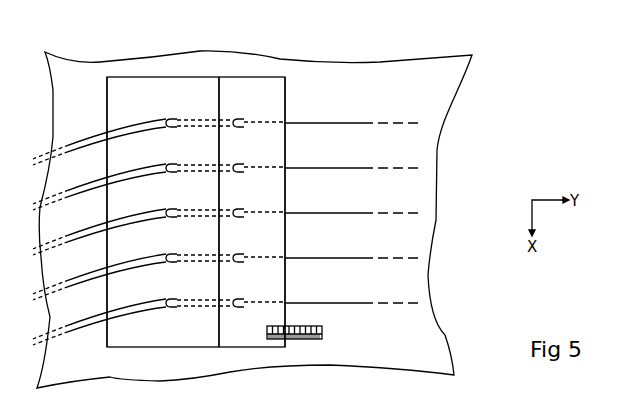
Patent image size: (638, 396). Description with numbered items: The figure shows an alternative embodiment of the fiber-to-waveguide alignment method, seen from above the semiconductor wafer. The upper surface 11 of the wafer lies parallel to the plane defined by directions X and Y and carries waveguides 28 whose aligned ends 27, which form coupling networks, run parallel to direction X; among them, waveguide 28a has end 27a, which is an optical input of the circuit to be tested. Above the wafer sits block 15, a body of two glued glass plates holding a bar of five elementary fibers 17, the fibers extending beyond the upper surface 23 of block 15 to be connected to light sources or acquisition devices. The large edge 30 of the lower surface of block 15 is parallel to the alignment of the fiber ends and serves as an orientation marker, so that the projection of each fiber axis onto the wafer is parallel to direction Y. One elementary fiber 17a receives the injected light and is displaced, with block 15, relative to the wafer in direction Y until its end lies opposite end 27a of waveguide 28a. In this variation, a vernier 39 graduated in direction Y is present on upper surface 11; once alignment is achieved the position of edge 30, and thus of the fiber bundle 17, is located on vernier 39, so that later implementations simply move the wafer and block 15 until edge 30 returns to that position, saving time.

The upper surface 11 is at (340, 78).
The block 15 is at (194, 70).
The upper surface 23 is at (137, 88).
The large edge 30 is at (286, 186).
The elementary fibers 17 is at (195, 119).
The elementary fiber 17a is at (196, 298).
The ends of waveguides 27 is at (244, 119).
The end of waveguide 27a is at (244, 299).
The waveguides 28 is at (345, 123).
The waveguide 28a is at (345, 303).
The vernier 39 is at (313, 340).